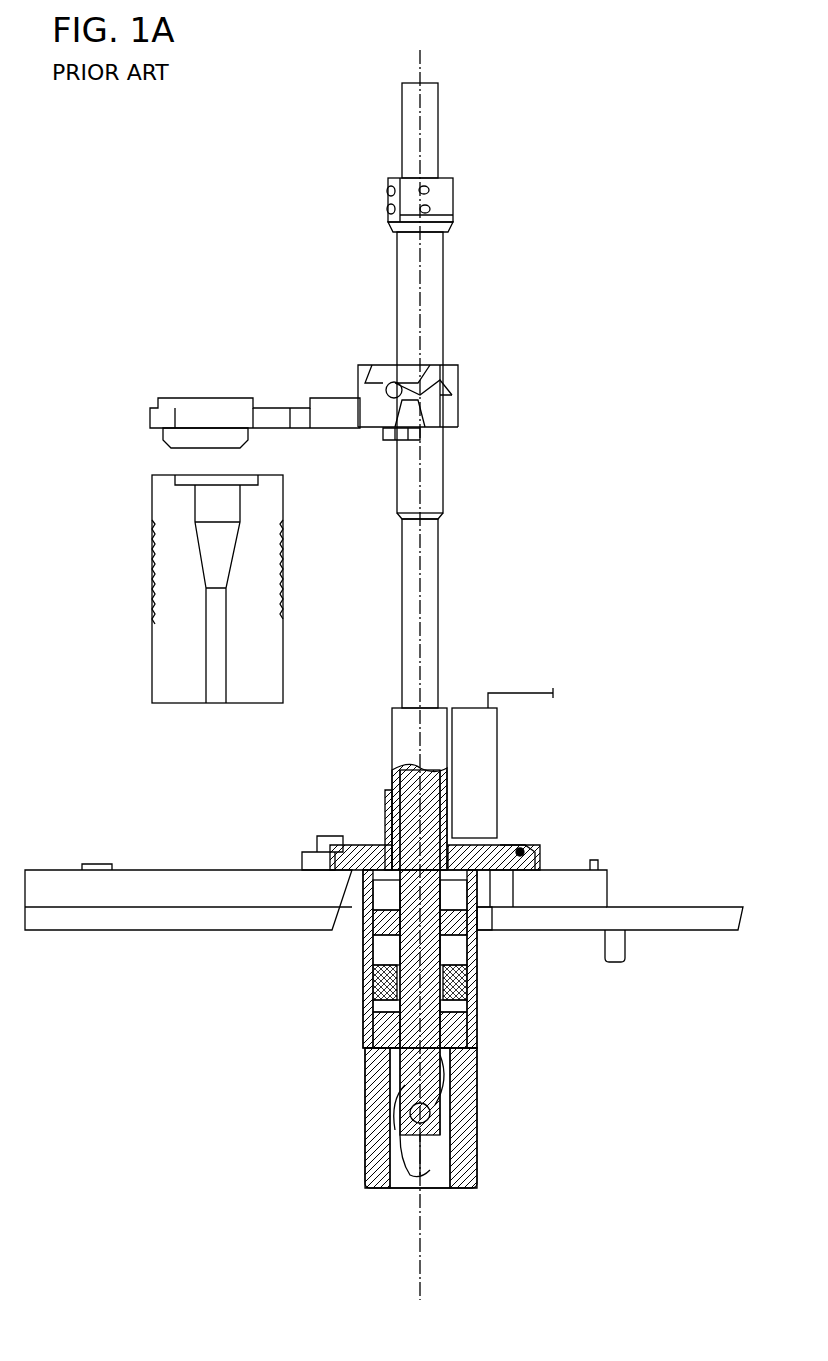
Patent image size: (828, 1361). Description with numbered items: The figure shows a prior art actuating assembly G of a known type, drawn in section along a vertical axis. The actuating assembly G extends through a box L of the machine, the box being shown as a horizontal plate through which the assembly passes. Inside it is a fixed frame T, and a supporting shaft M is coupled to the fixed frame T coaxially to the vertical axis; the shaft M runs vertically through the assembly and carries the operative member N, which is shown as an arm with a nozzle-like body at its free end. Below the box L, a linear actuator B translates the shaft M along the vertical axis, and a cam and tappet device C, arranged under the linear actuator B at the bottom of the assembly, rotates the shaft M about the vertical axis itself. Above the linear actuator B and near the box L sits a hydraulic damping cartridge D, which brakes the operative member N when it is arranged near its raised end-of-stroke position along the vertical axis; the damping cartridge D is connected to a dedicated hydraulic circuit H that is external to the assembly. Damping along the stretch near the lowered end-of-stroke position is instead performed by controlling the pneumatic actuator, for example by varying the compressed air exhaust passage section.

The operative member N is at (108, 400).
The supporting shaft M is at (432, 556).
The actuating assembly G is at (640, 652).
The hydraulic damping cartridge D is at (488, 783).
The hydraulic circuit H is at (540, 690).
The box L is at (635, 880).
The fixed frame T is at (349, 975).
The linear actuator B is at (477, 933).
The cam and tappet device C is at (477, 1145).